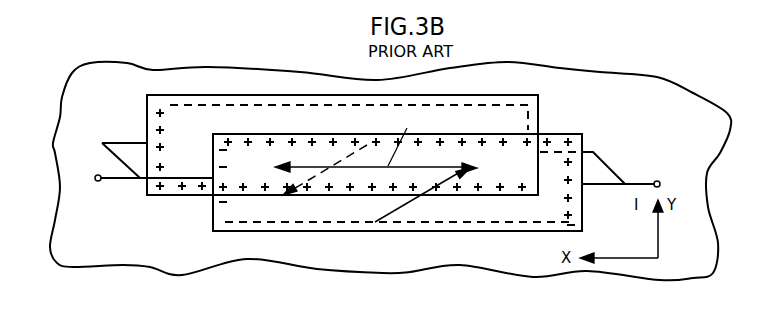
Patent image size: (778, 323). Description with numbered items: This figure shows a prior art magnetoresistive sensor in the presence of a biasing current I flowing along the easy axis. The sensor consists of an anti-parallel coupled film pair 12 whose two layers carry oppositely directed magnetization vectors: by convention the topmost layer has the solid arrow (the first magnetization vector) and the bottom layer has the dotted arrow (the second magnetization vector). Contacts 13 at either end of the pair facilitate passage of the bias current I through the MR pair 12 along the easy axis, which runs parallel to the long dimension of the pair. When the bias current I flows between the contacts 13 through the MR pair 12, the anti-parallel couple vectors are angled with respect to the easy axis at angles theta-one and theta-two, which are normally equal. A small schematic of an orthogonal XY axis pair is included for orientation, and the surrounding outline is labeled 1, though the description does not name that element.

The substrate 1 is at (657, 78).
The anti-parallel coupled film pair 12 is at (562, 137).
The contacts 13 is at (114, 178).